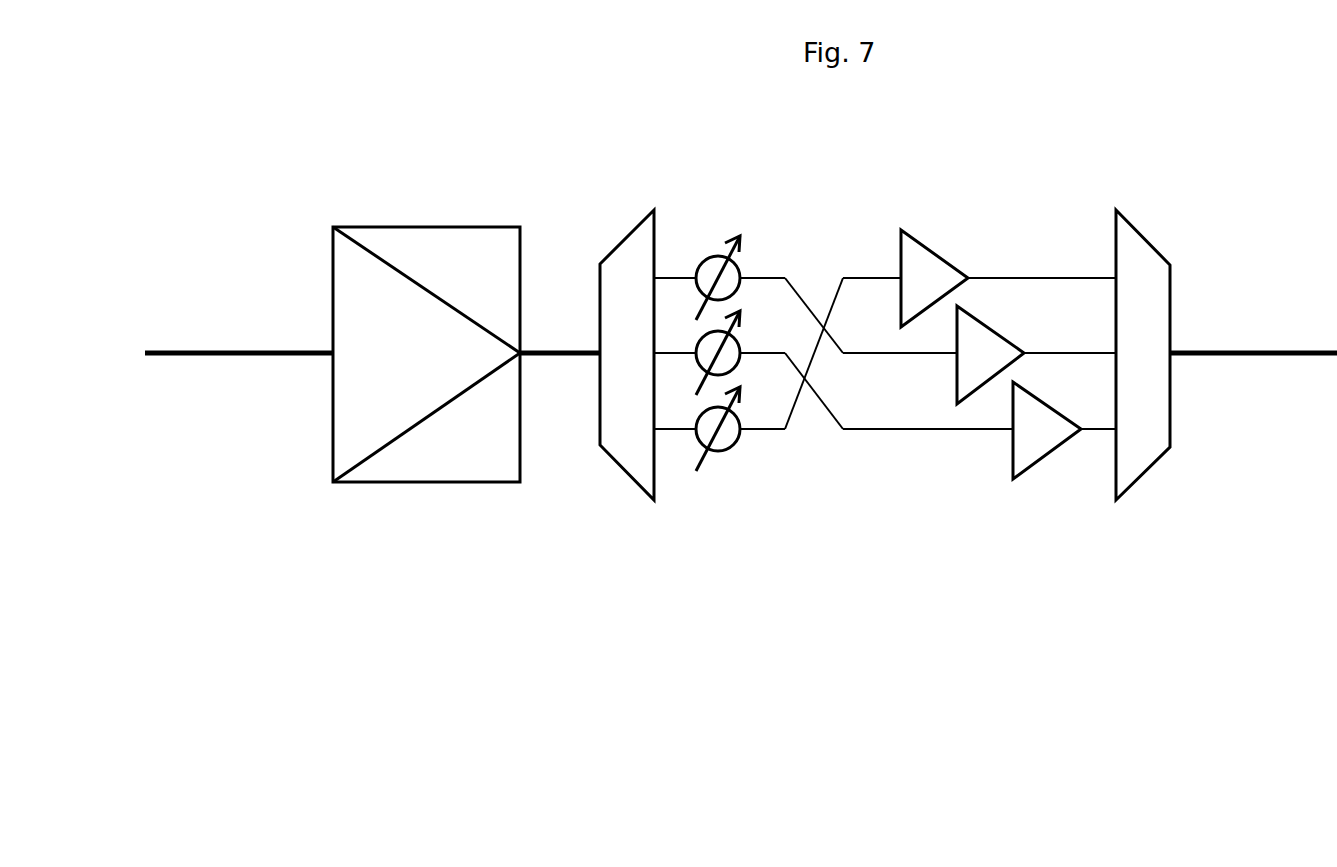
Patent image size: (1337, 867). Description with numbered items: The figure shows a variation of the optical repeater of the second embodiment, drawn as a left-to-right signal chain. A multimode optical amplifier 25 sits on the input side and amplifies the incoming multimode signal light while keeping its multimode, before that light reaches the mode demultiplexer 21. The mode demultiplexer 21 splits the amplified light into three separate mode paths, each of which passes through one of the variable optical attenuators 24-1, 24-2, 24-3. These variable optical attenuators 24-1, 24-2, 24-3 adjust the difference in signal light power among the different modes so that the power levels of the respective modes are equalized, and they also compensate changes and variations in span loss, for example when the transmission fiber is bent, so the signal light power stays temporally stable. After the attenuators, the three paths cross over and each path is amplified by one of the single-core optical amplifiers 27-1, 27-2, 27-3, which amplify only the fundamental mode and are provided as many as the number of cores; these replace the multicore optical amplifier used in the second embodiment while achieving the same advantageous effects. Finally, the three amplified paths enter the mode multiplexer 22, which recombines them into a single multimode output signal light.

The multimode optical amplifier 25 is at (425, 227).
The mode demultiplexer 21 is at (620, 235).
The mode multiplexer 22 is at (1150, 240).
The variable optical attenuator 24-1 is at (740, 263).
The variable optical attenuator 24-2 is at (738, 364).
The variable optical attenuator 24-3 is at (725, 452).
The single-core optical amplifier 27-1 is at (970, 231).
The single-core optical amplifier 27-2 is at (1030, 314).
The single-core optical amplifier 27-3 is at (1032, 470).